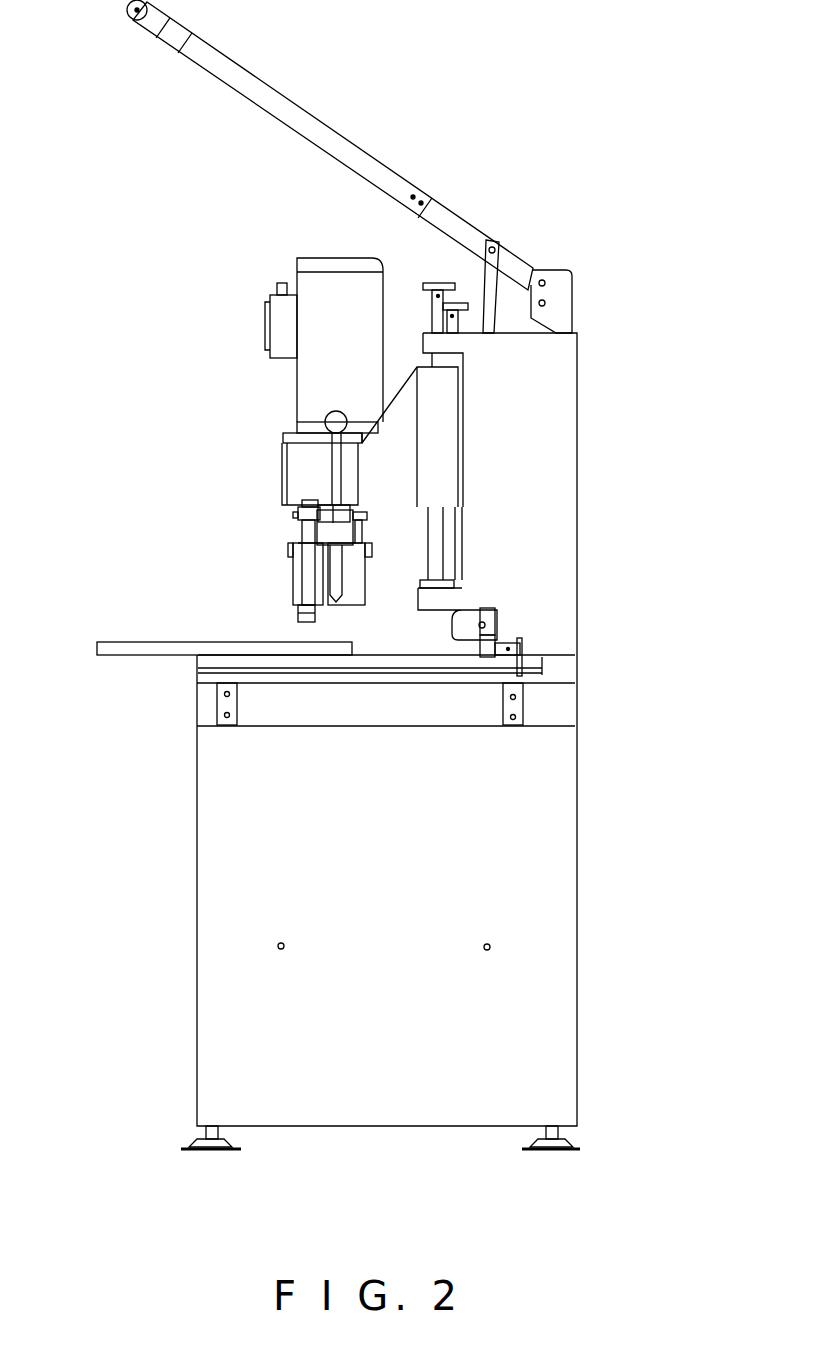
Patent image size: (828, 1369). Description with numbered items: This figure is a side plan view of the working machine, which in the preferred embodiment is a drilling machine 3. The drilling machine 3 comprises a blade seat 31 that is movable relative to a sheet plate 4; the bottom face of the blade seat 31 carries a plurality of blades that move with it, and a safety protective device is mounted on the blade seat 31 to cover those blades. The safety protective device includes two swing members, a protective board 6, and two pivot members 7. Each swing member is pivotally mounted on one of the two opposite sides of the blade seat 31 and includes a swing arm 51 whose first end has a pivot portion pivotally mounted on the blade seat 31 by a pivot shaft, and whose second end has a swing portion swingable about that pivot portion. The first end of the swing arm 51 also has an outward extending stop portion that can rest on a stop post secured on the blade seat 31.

The drilling machine 3 is at (588, 476).
The sheet plate 4 is at (131, 672).
The blade seat 31 is at (333, 522).
The swing arm 51 is at (297, 532).
The protective board 6 is at (282, 571).
The pivot member 7 is at (277, 548).